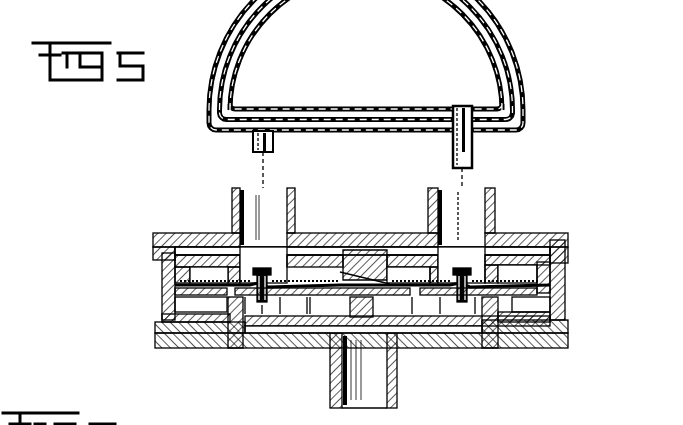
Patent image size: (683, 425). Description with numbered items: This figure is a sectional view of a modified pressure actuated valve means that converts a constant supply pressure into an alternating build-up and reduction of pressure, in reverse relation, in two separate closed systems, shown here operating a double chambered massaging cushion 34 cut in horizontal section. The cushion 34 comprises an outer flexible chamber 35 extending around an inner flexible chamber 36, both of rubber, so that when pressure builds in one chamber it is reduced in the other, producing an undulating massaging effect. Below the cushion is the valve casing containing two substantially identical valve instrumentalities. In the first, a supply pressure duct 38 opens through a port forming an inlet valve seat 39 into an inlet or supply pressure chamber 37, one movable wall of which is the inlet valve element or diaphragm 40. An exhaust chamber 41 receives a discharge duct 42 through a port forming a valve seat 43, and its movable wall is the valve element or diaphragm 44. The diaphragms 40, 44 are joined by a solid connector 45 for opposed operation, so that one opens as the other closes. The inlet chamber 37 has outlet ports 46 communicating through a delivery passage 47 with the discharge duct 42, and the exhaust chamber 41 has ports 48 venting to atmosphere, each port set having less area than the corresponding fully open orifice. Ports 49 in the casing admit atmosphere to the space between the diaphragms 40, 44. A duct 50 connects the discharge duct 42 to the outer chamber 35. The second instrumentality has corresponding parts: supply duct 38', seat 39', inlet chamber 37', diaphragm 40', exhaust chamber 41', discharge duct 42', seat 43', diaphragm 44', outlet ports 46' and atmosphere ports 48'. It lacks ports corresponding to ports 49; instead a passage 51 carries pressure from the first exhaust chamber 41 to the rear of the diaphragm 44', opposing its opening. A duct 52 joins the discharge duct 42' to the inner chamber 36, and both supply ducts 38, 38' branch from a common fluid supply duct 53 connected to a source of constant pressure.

The massaging cushion 34 is at (530, 64).
The inner flexible chamber 36 is at (480, 92).
The outer flexible chamber 35 is at (520, 119).
The duct 50 is at (282, 212).
The duct 52 is at (478, 206).
The common fluid supply duct 53 is at (388, 393).
The delivery passage 47 is at (328, 252).
The exhaust chamber 41 is at (175, 244).
The exhaust chamber 41' is at (550, 249).
The ports 48 is at (328, 259).
The ports 48' is at (391, 263).
The valve element or diaphragm 44 is at (207, 250).
The valve element or diaphragm 44' is at (517, 274).
The discharge duct 42 is at (220, 270).
The discharge duct 42' is at (420, 269).
The valve seat 43 is at (264, 255).
The valve seat 43' is at (465, 265).
The passage 51 is at (345, 275).
The ports 49 is at (162, 288).
The solid connector 45 is at (272, 292).
The inlet or supply pressure chamber 37 is at (201, 306).
The inlet or supply pressure chamber 37' is at (531, 306).
The inlet valve seat 39 is at (253, 334).
The inlet valve seat 39' is at (474, 322).
The inlet valve element or diaphragm 40 is at (356, 342).
The inlet valve element or diaphragm 40' is at (523, 343).
The supply pressure duct 38 is at (361, 345).
The fluid supply duct 38' is at (488, 344).
The outlet ports 46 is at (138, 286).
The outlet ports 46' is at (576, 280).